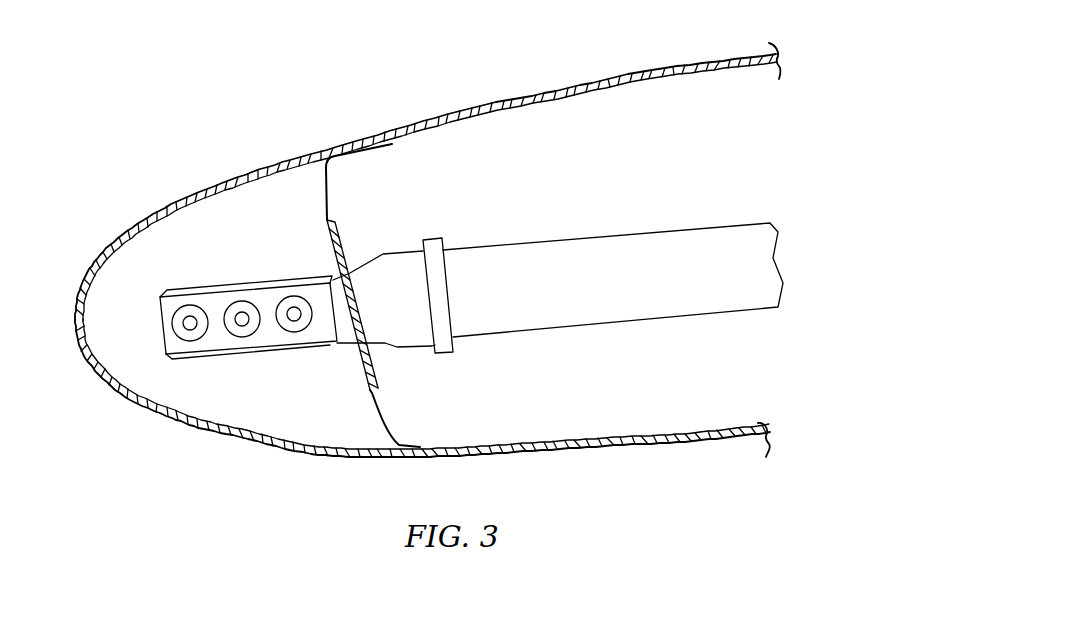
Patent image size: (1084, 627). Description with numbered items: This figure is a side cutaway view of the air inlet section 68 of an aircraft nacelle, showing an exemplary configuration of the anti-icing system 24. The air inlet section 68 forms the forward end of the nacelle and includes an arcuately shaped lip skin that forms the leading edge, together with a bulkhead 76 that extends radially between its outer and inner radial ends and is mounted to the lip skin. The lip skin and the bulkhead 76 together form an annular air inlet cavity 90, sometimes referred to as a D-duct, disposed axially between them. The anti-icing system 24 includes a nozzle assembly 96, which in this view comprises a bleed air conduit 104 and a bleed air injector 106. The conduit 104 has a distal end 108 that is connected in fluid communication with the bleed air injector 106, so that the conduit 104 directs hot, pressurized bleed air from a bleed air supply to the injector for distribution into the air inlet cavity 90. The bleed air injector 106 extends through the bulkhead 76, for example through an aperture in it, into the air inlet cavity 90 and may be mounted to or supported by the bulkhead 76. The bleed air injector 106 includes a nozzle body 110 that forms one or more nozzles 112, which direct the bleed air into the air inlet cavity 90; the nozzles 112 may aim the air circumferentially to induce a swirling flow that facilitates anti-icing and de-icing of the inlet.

The anti-icing system 24 is at (597, 119).
The air inlet section 68 is at (203, 146).
The bulkhead 76 is at (372, 407).
The air inlet cavity 90 is at (303, 407).
The nozzle assembly 96 is at (568, 223).
The bleed air conduit 104 is at (548, 303).
The bleed air injector 106 is at (357, 259).
The distal end 108 is at (447, 277).
The nozzle body 110 is at (268, 279).
The nozzles 112 is at (280, 322).